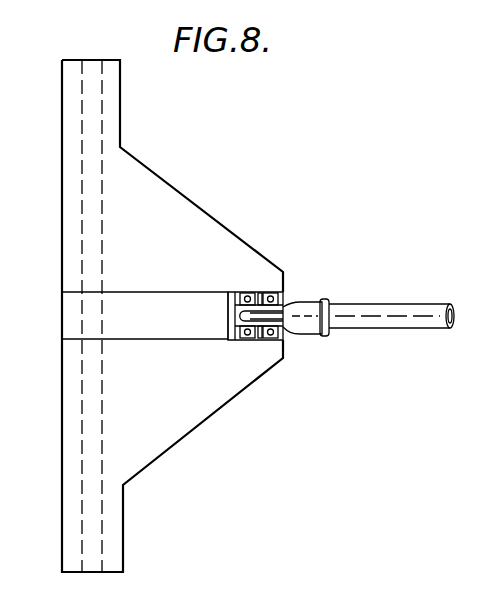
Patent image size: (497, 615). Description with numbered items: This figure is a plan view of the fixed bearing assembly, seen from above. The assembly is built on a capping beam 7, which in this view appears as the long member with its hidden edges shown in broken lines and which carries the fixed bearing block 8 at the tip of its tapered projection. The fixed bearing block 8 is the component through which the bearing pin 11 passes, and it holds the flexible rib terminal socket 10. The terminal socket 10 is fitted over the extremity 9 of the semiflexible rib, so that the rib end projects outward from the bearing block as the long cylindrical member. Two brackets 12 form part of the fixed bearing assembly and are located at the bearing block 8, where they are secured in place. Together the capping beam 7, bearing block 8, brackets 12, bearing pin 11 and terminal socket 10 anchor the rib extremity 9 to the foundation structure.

The capping beam 7 is at (63, 330).
The fixed bearing block 8 is at (285, 301).
The extremity of the semiflexible rib 9 is at (396, 306).
The flexible rib terminal socket 10 is at (307, 302).
The bearing pin 11 is at (285, 358).
The brackets 12 is at (257, 338).